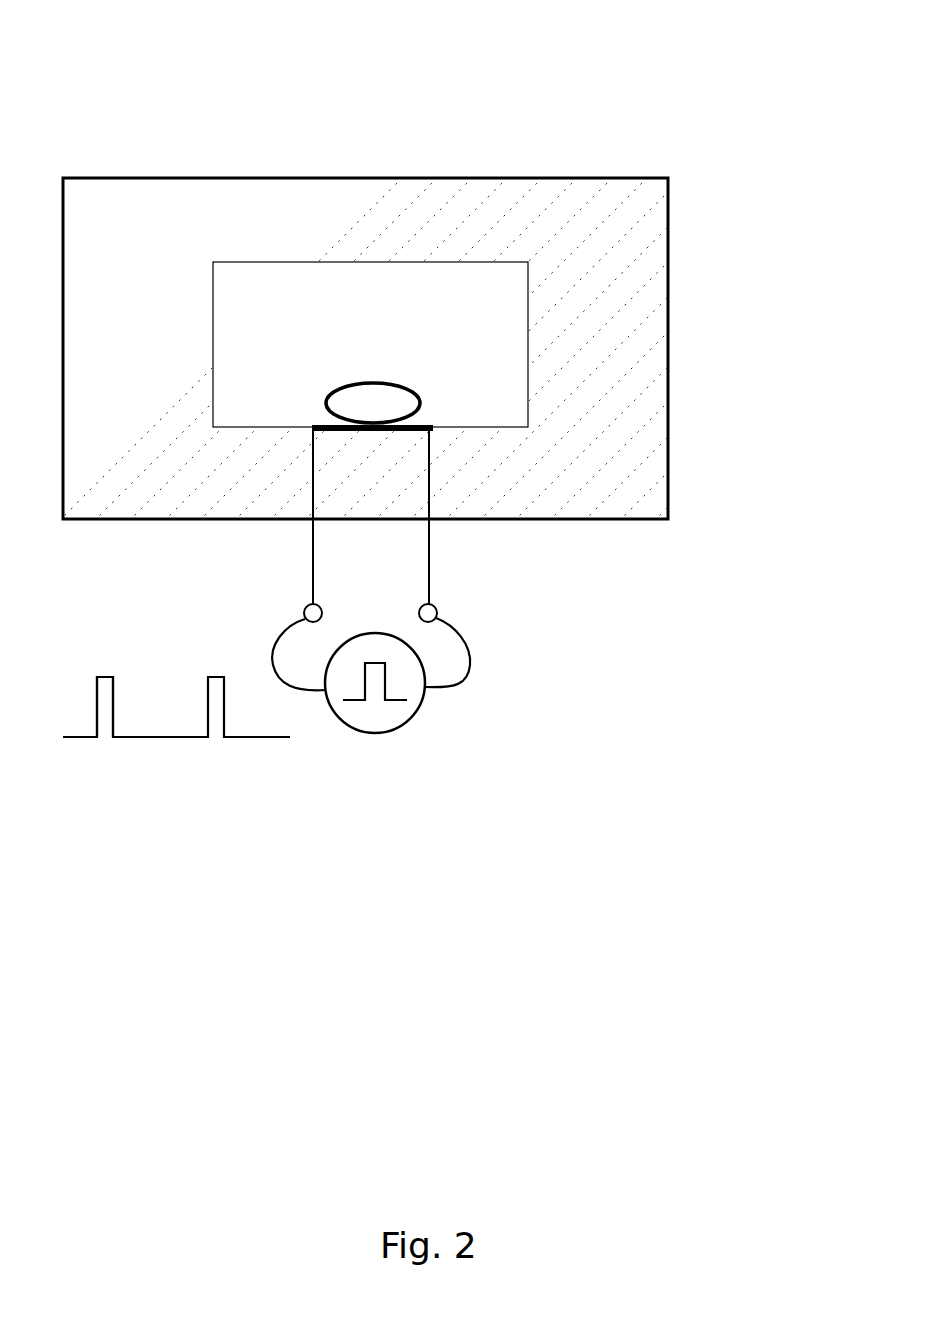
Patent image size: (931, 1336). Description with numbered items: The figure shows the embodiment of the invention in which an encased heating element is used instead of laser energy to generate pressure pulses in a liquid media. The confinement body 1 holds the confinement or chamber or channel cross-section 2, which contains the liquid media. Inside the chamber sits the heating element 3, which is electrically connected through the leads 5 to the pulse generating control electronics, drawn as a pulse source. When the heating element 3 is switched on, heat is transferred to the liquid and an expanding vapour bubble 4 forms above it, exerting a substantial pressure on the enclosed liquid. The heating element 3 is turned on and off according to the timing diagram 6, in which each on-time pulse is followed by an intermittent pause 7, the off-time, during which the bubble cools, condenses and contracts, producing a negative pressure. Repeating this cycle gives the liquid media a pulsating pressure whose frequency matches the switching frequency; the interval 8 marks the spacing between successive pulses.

The confinement body 1 is at (556, 222).
The confinement or chamber or channel cross-section 2 is at (293, 278).
The heating element 3 is at (400, 432).
The expanding vapour bubble 4 is at (398, 400).
The leads 5 is at (428, 570).
The timing diagram 6 is at (171, 707).
The intermittent pause 7 is at (107, 683).
The pulse interval 8 is at (141, 732).